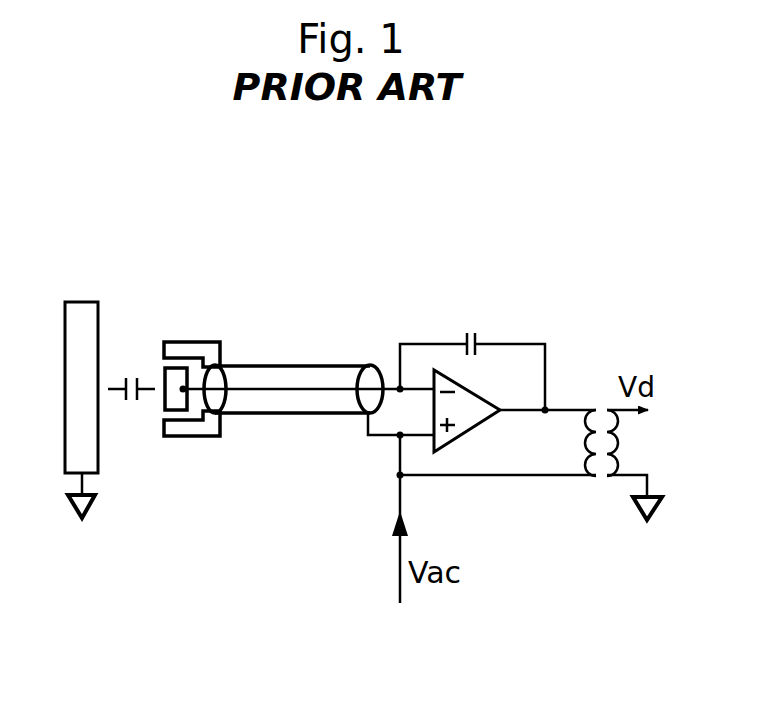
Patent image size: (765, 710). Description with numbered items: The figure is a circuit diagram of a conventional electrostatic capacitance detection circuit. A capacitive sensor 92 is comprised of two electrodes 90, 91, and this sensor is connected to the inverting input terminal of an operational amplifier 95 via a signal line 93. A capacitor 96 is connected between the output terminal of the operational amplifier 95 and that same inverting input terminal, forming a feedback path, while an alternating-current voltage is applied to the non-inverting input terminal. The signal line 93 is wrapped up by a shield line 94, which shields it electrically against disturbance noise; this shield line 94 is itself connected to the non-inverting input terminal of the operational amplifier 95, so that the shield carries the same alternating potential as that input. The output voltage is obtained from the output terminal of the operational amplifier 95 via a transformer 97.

The electrode 90 is at (75, 300).
The electrode 91 is at (170, 410).
The capacitive sensor 92 is at (132, 333).
The signal line 93 is at (263, 389).
The shield line 94 is at (313, 413).
The operational amplifier 95 is at (448, 372).
The capacitor 96 is at (470, 320).
The transformer 97 is at (600, 402).